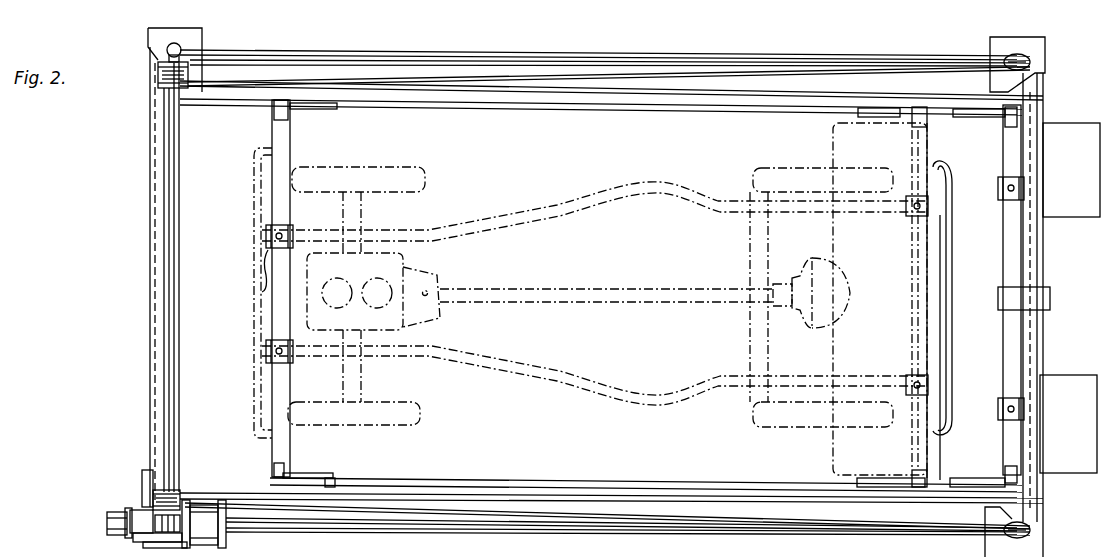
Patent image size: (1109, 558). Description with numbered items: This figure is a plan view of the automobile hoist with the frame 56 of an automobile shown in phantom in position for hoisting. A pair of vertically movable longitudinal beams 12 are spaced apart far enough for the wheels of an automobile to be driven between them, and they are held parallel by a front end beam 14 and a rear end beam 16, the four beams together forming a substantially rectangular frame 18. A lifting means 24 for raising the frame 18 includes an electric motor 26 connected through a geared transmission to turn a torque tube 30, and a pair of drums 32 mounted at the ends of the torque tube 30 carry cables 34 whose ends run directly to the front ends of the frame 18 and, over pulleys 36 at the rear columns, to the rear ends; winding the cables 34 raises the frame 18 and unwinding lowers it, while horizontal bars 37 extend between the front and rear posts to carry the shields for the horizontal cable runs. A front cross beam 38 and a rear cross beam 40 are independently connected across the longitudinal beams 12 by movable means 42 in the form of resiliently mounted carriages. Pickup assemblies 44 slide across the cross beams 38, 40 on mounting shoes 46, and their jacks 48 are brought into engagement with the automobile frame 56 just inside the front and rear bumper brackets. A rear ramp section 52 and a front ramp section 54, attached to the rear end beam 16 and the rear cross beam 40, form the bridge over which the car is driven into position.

The longitudinal beams 12 is at (877, 494).
The front end beam 14 is at (160, 341).
The rear end beam 16 is at (1027, 364).
The frame 18 is at (717, 503).
The lifting means 24 is at (130, 504).
The electric motor 26 is at (226, 536).
The torque tube 30 is at (172, 244).
The drums 32 is at (178, 72).
The cables 34 is at (588, 74).
The pulleys 36 is at (1040, 57).
The horizontal bars 37 is at (655, 56).
The front cross beam 38 is at (278, 451).
The rear cross beam 40 is at (1010, 456).
The movable means 42 is at (335, 478).
The pickup assemblies 44 is at (266, 227).
The mounting shoes 46 is at (262, 292).
The jacks 48 is at (290, 358).
The rear ramp section 52 is at (1063, 212).
The front ramp section 54 is at (965, 204).
The frame of an automobile 56 is at (547, 207).